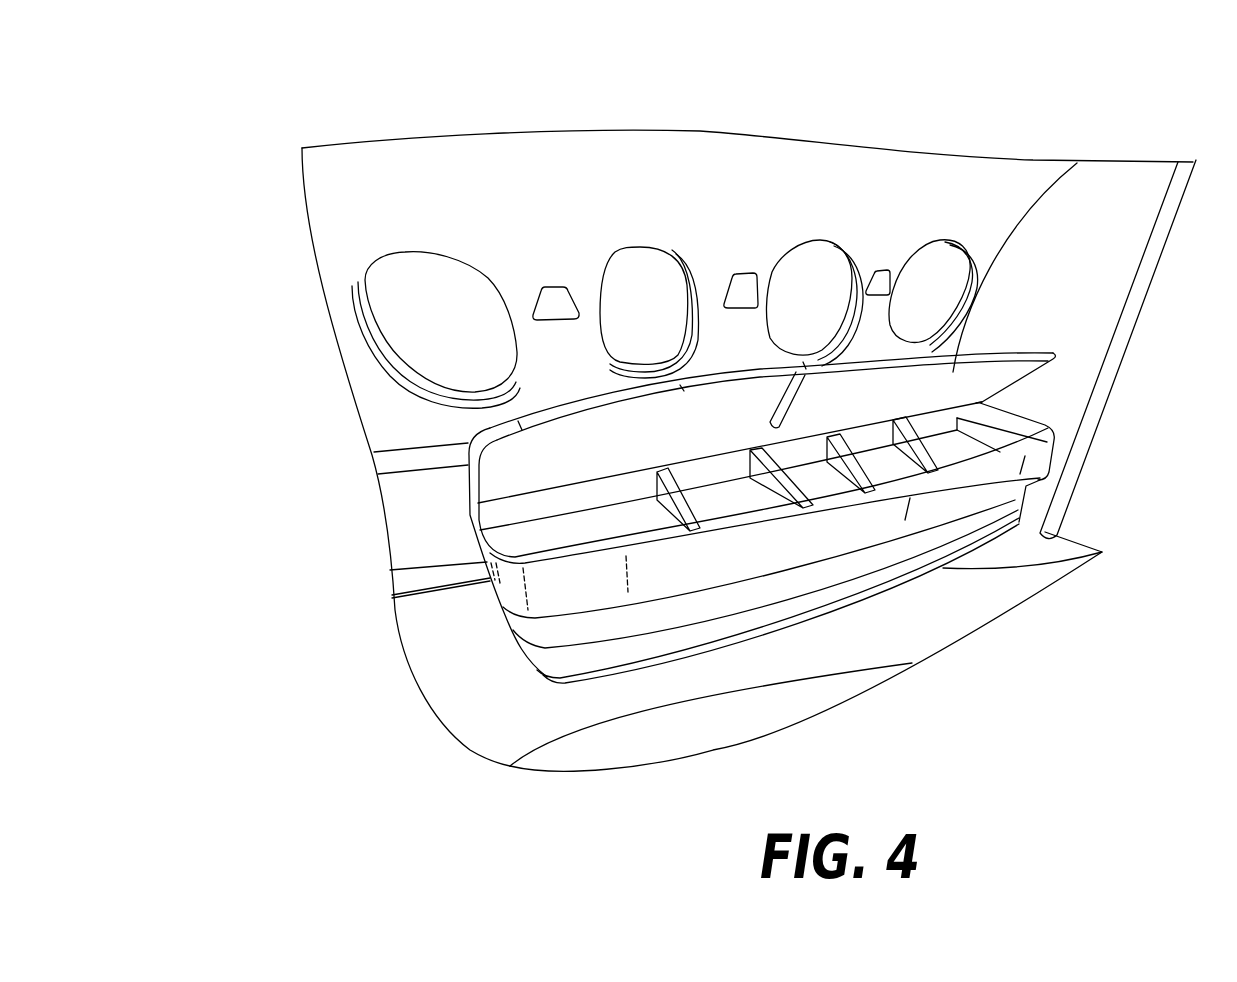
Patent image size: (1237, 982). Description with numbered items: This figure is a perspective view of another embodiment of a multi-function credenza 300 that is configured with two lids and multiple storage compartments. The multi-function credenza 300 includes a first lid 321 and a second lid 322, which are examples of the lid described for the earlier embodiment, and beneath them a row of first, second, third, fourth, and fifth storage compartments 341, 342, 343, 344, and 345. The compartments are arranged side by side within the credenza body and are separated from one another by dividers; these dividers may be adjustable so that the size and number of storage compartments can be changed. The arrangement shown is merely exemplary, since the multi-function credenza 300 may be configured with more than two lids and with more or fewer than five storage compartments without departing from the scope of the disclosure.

The multi-function credenza 300 is at (316, 103).
The first lid 321 is at (497, 462).
The second lid 322 is at (872, 392).
The first storage compartment 341 is at (513, 543).
The second storage compartment 342 is at (727, 507).
The third storage compartment 343 is at (832, 488).
The fourth storage compartment 344 is at (908, 466).
The fifth storage compartment 345 is at (993, 449).